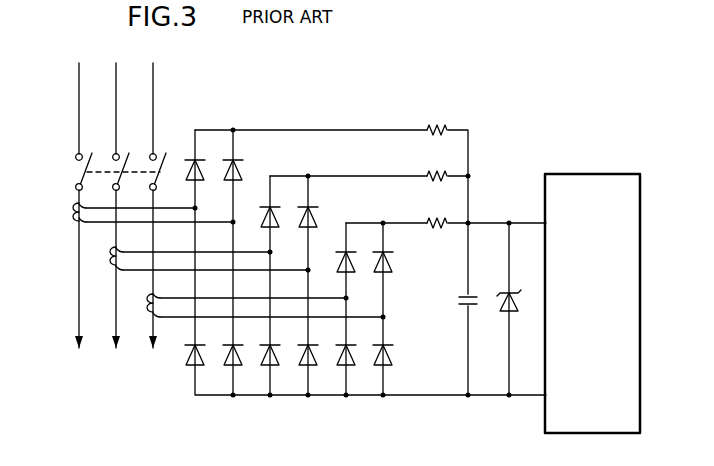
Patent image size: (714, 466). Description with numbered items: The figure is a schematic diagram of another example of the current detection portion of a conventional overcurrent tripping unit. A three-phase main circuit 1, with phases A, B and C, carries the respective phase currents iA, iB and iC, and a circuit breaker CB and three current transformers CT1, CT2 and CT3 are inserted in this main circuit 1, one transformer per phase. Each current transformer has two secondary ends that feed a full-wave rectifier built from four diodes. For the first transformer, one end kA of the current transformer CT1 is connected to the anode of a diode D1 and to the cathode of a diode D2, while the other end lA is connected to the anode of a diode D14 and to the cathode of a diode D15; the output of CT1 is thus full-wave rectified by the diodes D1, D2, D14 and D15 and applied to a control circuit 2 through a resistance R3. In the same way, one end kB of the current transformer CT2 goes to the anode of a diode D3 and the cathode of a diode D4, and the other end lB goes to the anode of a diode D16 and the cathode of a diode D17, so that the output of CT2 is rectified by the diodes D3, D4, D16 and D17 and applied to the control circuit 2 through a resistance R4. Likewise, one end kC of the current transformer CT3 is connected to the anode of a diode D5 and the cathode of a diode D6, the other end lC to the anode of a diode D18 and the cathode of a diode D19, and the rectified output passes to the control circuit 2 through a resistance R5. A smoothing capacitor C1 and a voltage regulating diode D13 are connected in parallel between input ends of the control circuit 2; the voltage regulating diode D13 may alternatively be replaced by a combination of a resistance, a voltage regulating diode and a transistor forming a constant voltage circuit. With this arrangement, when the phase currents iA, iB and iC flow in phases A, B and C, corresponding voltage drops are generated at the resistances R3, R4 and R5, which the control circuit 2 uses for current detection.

The main circuit 1 is at (159, 92).
The control circuit 2 is at (595, 173).
The circuit breaker CB is at (72, 171).
The current transformer CT1 is at (72, 218).
The current transformer CT2 is at (113, 272).
The current transformer CT3 is at (150, 318).
The one end of current transformer CT1 kA is at (140, 199).
The other end of current transformer CT1 lA is at (159, 235).
The one end of current transformer CT2 kB is at (196, 244).
The other end of current transformer CT2 lB is at (215, 284).
The one end of current transformer CT3 kC is at (253, 293).
The other end of current transformer CT3 lC is at (271, 330).
The phase current iA is at (82, 287).
The phase current iB is at (119, 287).
The phase current iC is at (156, 287).
The diode D1 is at (203, 182).
The diode D2 is at (203, 367).
The diode D3 is at (278, 228).
The diode D4 is at (278, 367).
The diode D5 is at (354, 272).
The diode D6 is at (354, 367).
The voltage regulating diode D13 is at (516, 312).
The diode D14 is at (243, 170).
The diode D15 is at (241, 367).
The diode D16 is at (317, 216).
The diode D17 is at (316, 367).
The diode D18 is at (392, 262).
The diode D19 is at (391, 367).
The resistance R3 is at (436, 126).
The resistance R4 is at (438, 173).
The resistance R5 is at (438, 221).
The smoothing capacitor C1 is at (472, 308).